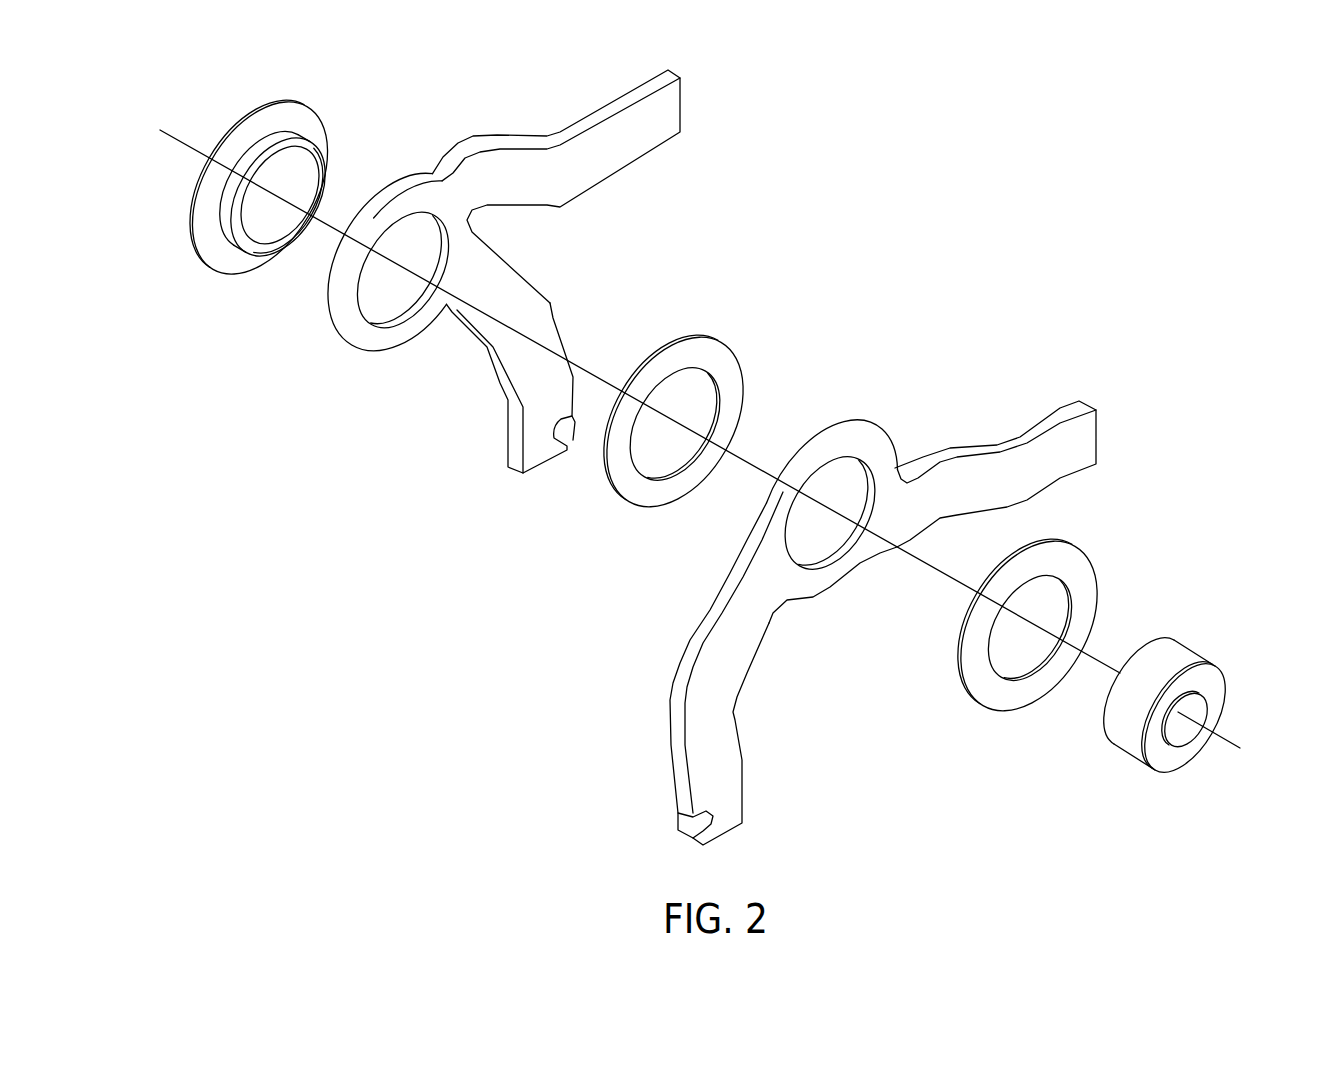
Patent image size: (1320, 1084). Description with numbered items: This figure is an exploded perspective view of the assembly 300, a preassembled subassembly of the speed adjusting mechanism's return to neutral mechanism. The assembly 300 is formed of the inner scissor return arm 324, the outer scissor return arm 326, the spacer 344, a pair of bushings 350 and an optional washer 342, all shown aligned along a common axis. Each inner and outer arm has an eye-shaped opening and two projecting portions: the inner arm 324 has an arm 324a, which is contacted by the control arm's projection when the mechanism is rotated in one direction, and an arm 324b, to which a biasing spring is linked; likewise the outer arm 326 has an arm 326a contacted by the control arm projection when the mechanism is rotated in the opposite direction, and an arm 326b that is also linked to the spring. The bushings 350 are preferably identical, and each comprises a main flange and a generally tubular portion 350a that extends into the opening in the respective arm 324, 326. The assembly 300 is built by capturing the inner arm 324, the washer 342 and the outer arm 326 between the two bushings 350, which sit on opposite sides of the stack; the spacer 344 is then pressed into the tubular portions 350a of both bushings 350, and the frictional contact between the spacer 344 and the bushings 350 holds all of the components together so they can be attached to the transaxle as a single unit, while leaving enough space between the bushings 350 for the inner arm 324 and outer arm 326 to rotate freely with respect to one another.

The assembly 300 is at (1103, 187).
The inner scissor return arm 324 is at (517, 271).
The arm of inner scissor return arm 324a is at (639, 132).
The arm of inner scissor return arm 324b is at (537, 410).
The outer scissor return arm 326 is at (888, 585).
The arm of outer scissor return arm 326a is at (1062, 458).
The arm of outer scissor return arm 326b is at (703, 745).
The washer 342 is at (606, 472).
The spacer 344 is at (1106, 720).
The bushing 350 is at (640, 407).
The tubular portion 350a is at (259, 150).